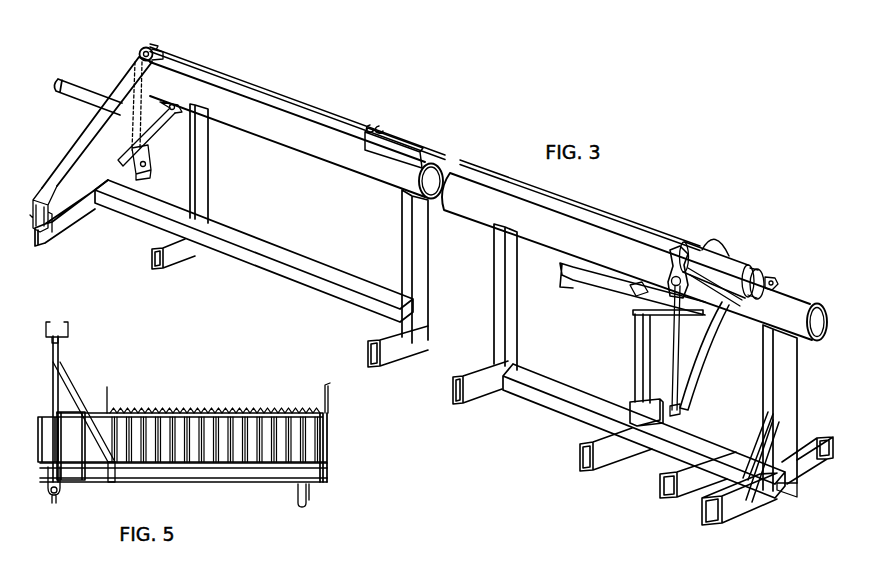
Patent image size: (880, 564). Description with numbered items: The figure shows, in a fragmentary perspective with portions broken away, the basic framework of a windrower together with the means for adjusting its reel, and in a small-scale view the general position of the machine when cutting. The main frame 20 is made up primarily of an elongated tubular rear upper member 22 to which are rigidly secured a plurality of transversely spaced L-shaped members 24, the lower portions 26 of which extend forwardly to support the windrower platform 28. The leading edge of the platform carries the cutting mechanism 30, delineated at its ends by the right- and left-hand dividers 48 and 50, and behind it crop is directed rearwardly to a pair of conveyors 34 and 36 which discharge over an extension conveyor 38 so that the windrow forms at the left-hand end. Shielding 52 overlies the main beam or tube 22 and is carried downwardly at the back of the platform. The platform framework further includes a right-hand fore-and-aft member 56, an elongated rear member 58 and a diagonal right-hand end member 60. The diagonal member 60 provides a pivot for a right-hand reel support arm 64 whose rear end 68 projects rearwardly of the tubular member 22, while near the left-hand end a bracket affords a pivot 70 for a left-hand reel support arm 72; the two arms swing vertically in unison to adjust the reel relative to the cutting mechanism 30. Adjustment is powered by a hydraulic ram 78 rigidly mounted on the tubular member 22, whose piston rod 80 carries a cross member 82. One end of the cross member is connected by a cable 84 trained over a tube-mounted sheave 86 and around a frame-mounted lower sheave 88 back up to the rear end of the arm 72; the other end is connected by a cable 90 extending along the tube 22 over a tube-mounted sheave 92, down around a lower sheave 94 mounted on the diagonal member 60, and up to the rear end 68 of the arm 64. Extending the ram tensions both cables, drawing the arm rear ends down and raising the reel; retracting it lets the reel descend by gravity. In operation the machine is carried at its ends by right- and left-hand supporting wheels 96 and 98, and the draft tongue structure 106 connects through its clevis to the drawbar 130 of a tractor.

In FIG. 3, the main frame 20 is at (275, 297).
In FIG. 5, the main frame 20 is at (333, 489).
In FIG. 3, the tubular rear upper member 22 is at (330, 152).
In FIG. 5, the tubular rear upper member 22 is at (98, 482).
In FIG. 3, the L-shaped members 24 is at (200, 177).
In FIG. 3, the lower portions 26 is at (176, 268).
In FIG. 5, the windrower platform 28 is at (327, 432).
In FIG. 5, the cutting mechanism 30 is at (232, 413).
In FIG. 5, the conveyor 34 is at (291, 425).
In FIG. 5, the conveyor 36 is at (143, 424).
In FIG. 5, the extension conveyor 38 is at (42, 421).
In FIG. 5, the right-hand divider 48 is at (328, 393).
In FIG. 5, the left-hand divider 50 is at (107, 398).
In FIG. 5, the shielding 52 is at (203, 482).
In FIG. 3, the right-hand fore-and-aft member 56 is at (75, 224).
In FIG. 3, the elongated rear member 58 is at (138, 217).
In FIG. 3, the diagonal right-hand end member 60 is at (57, 162).
In FIG. 3, the right-hand reel support arm 64 is at (72, 87).
In FIG. 3, the rear end of right-hand reel arm 68 is at (173, 112).
In FIG. 3, the pivot 70 is at (632, 307).
In FIG. 3, the left-hand reel support arm 72 is at (588, 291).
In FIG. 3, the hydraulic ram 78 is at (728, 264).
In FIG. 3, the piston rod 80 is at (765, 277).
In FIG. 3, the cross member 82 is at (780, 285).
In FIG. 3, the cable 84 is at (720, 293).
In FIG. 3, the tube-mounted sheave 86 is at (670, 278).
In FIG. 3, the lower sheave 88 is at (680, 406).
In FIG. 3, the cable 90 is at (613, 227).
In FIG. 3, the tube-mounted sheave 92 is at (144, 49).
In FIG. 3, the lower sheave 94 is at (137, 174).
In FIG. 5, the right-hand supporting wheel 96 is at (297, 506).
In FIG. 5, the left-hand supporting wheel 98 is at (53, 500).
In FIG. 5, the draft tongue structure 106 is at (47, 374).
In FIG. 5, the drawbar 130 is at (79, 307).